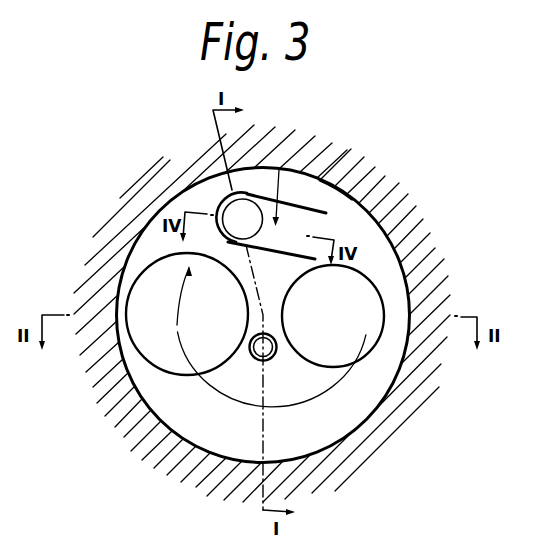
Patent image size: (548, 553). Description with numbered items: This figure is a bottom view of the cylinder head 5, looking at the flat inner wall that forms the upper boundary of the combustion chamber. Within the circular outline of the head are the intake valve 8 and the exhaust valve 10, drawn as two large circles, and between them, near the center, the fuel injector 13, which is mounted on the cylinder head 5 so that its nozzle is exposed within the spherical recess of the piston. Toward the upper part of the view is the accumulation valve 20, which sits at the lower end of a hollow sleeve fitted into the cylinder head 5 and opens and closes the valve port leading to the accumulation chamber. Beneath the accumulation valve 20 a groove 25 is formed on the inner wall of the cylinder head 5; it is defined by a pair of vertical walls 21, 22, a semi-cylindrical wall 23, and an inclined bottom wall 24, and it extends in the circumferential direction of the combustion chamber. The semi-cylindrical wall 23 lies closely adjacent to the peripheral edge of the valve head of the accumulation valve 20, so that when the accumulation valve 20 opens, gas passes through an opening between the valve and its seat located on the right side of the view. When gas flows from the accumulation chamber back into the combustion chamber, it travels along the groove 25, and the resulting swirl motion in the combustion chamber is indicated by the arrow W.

The cylinder head 5 is at (123, 418).
The intake valve 8 is at (145, 340).
The exhaust valve 10 is at (362, 297).
The fuel injector 13 is at (268, 346).
The accumulation valve 20 is at (298, 189).
The vertical wall 21 is at (277, 257).
The vertical wall 22 is at (312, 207).
The semi-cylindrical wall 23 is at (205, 185).
The inclined bottom wall 24 is at (337, 189).
The groove 25 is at (293, 236).
The arrow indicating swirl motion W is at (338, 382).